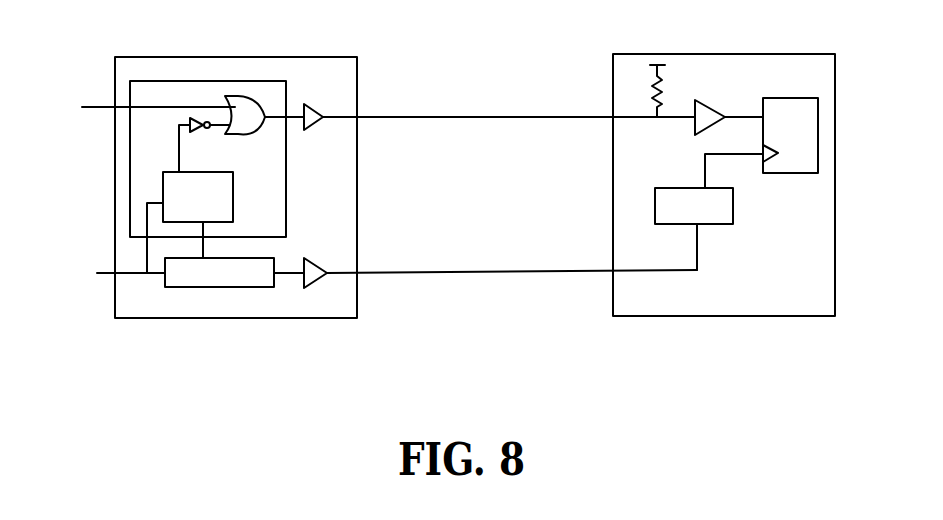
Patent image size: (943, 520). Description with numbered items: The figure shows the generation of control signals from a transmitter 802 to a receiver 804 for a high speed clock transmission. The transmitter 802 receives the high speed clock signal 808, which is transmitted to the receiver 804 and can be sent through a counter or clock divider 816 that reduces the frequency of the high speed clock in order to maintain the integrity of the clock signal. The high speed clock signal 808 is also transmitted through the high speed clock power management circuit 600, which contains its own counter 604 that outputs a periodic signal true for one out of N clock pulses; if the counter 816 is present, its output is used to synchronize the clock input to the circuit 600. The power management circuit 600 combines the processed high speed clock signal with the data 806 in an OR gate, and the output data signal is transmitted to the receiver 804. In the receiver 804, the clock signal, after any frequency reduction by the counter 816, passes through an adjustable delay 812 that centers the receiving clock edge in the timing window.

The transmitter 802 is at (350, 53).
The receiver 804 is at (724, 169).
The data 806 is at (145, 102).
The high speed clock signal 808 is at (101, 267).
The adjustable delay 812 is at (697, 229).
The counter or clock divider 816 is at (246, 286).
The high speed clock power management circuit 600 is at (208, 159).
The counter 604 is at (198, 215).